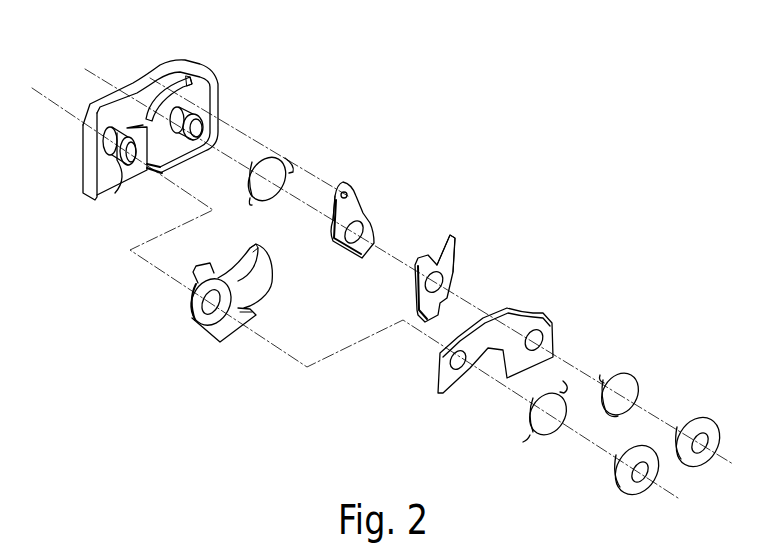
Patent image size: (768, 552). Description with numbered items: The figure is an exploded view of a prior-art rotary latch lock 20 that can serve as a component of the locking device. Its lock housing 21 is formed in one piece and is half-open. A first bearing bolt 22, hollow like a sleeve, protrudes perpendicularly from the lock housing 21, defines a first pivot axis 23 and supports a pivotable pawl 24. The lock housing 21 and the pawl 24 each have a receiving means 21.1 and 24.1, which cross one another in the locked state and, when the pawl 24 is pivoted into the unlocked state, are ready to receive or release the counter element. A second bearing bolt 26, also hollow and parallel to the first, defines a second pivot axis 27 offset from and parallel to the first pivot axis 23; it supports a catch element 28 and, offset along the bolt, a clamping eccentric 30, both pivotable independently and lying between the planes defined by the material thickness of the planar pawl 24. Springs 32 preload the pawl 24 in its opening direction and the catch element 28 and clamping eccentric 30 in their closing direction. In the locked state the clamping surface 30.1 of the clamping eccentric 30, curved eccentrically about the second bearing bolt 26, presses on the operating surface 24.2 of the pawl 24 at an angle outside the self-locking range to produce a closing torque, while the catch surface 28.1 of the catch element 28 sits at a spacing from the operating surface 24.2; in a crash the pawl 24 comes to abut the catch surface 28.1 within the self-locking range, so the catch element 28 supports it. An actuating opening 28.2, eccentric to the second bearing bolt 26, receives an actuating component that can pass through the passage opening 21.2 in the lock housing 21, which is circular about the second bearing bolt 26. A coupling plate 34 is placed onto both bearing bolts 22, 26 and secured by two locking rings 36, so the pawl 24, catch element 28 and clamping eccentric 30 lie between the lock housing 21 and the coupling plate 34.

The rotary latch lock 20 is at (418, 200).
The lock housing 21 is at (190, 92).
The receiving means 21.1 is at (140, 155).
The passage opening 21.2 is at (188, 80).
The first bearing bolt 22 is at (107, 143).
The first pivot axis 23 is at (52, 97).
The pawl 24 is at (242, 293).
The receiving means 24.1 is at (248, 310).
The operating surface 24.2 is at (273, 280).
The second bearing bolt 26 is at (195, 117).
The second pivot axis 27 is at (107, 79).
The catch element 28 is at (363, 213).
The catch surface 28.1 is at (330, 223).
The actuating opening 28.2 is at (342, 180).
The clamping eccentric 30 is at (460, 250).
The clamping surface 30.1 is at (422, 253).
The springs 32 is at (283, 156).
The coupling plate 34 is at (523, 310).
The locking rings 36 is at (615, 474).